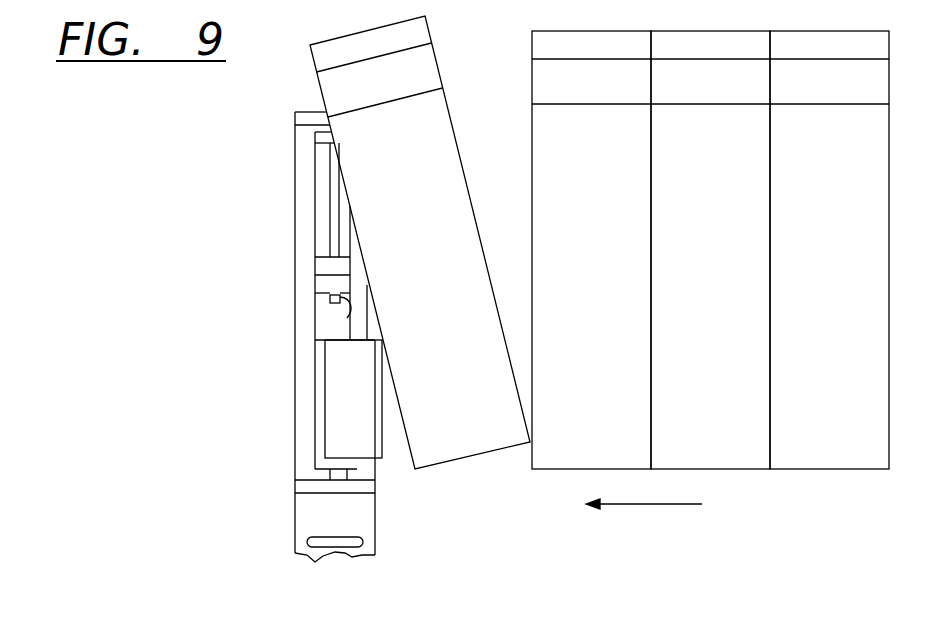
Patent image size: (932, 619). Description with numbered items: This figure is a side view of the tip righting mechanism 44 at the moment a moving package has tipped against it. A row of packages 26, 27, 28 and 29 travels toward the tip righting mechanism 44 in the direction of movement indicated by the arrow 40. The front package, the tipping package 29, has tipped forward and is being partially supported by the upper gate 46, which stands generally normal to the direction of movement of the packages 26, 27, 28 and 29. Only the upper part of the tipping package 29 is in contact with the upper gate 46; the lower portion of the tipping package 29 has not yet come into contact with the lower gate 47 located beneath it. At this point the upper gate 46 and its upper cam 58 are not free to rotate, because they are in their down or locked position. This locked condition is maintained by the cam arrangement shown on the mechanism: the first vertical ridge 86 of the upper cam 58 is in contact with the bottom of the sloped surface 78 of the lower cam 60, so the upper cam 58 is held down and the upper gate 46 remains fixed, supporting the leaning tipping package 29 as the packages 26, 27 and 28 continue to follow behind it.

The tip righting mechanism 44 is at (284, 111).
The upper gate 46 is at (337, 208).
The upper cam 58 is at (325, 291).
The first vertical ridge 86 is at (332, 299).
The sloped surface 78 is at (349, 304).
The lower cam 60 is at (347, 318).
The lower gate 47 is at (352, 408).
The tipping package 29 is at (436, 284).
The package 28 is at (604, 281).
The package 27 is at (719, 271).
The package 26 is at (839, 260).
The arrow 40 is at (667, 505).